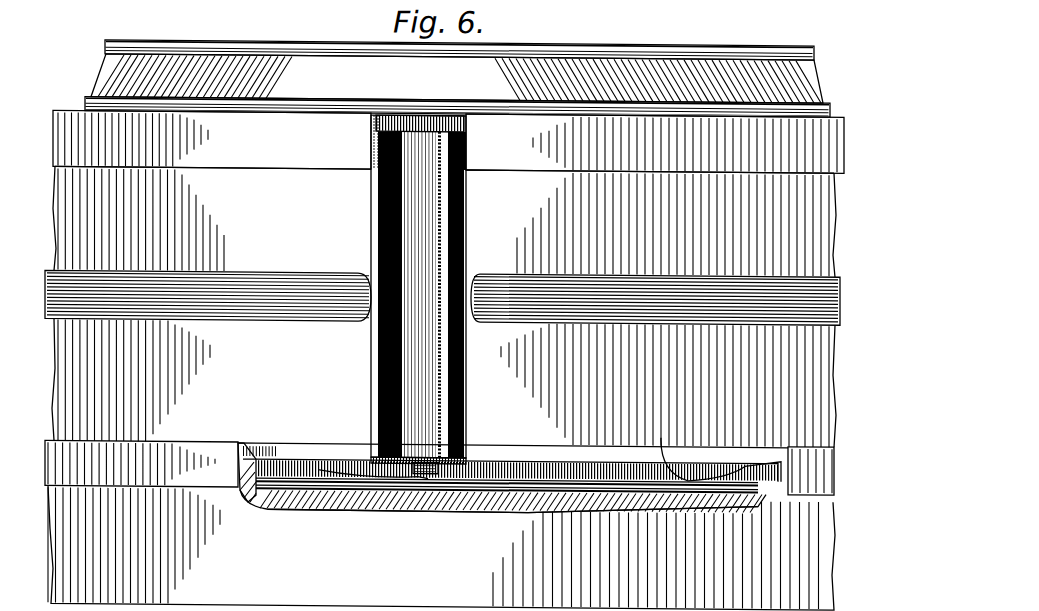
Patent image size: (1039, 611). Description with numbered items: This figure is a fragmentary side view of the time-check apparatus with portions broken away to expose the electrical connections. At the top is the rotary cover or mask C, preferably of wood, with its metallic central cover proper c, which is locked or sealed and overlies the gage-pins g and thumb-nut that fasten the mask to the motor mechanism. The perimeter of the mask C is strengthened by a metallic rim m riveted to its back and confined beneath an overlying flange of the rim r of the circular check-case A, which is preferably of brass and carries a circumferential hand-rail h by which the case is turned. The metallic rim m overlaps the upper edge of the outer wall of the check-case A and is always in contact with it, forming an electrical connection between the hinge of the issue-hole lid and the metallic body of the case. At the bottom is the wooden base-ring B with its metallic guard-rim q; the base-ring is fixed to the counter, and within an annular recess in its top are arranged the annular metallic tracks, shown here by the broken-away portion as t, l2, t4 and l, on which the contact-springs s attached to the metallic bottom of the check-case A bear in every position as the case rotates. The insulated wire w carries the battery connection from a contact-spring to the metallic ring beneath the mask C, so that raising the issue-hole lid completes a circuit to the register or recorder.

The central cover c is at (457, 79).
The rotary cover or mask C is at (415, 286).
The metallic rim m is at (461, 114).
The rim r is at (448, 141).
The check-case A is at (442, 388).
The hand-rail h is at (442, 288).
The metallic guard-rim q is at (444, 467).
The insulated wire w is at (420, 349).
The column chain line l is at (429, 295).
The tray t is at (509, 479).
The small block at column foot l2 is at (418, 469).
The tray base hatched band t4 is at (416, 498).
The base-ring B is at (425, 525).
The gage-pins g is at (373, 472).
The contact-spring s is at (719, 457).